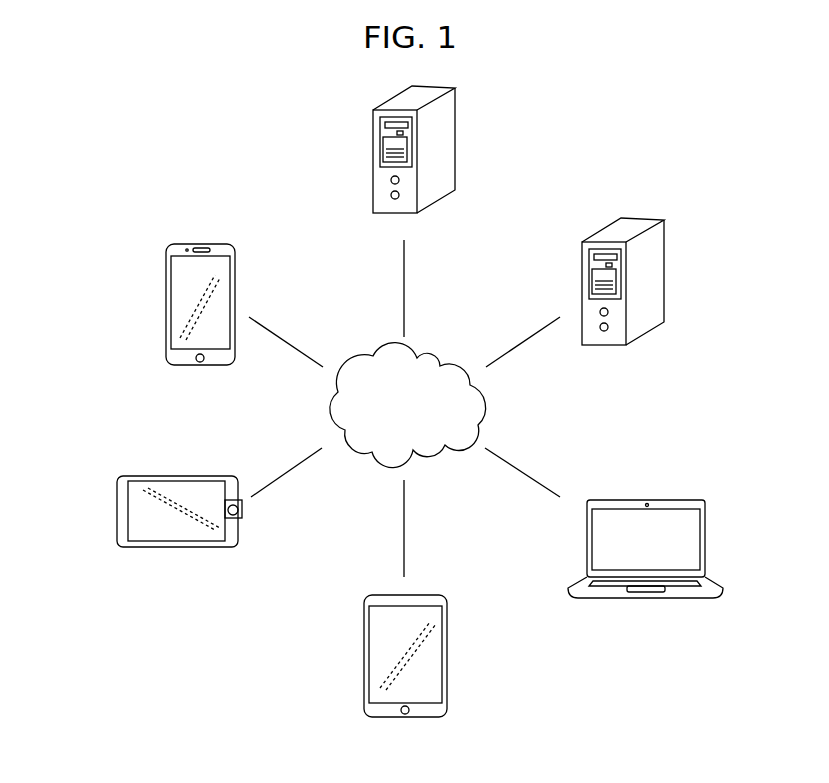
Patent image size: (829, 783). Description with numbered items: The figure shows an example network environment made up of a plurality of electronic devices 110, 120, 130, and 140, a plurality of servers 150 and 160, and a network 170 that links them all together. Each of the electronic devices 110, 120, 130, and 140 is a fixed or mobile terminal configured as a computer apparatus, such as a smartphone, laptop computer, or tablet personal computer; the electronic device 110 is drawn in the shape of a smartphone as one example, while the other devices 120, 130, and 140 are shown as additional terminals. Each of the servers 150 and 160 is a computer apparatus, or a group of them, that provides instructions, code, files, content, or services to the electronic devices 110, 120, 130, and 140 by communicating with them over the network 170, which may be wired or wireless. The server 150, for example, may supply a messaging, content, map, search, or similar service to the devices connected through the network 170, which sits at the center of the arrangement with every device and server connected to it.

The electronic device 110 is at (166, 304).
The electronic device 120 is at (117, 509).
The electronic device 130 is at (447, 656).
The electronic device 140 is at (705, 540).
The server 150 is at (667, 270).
The server 160 is at (457, 137).
The network 170 is at (427, 360).